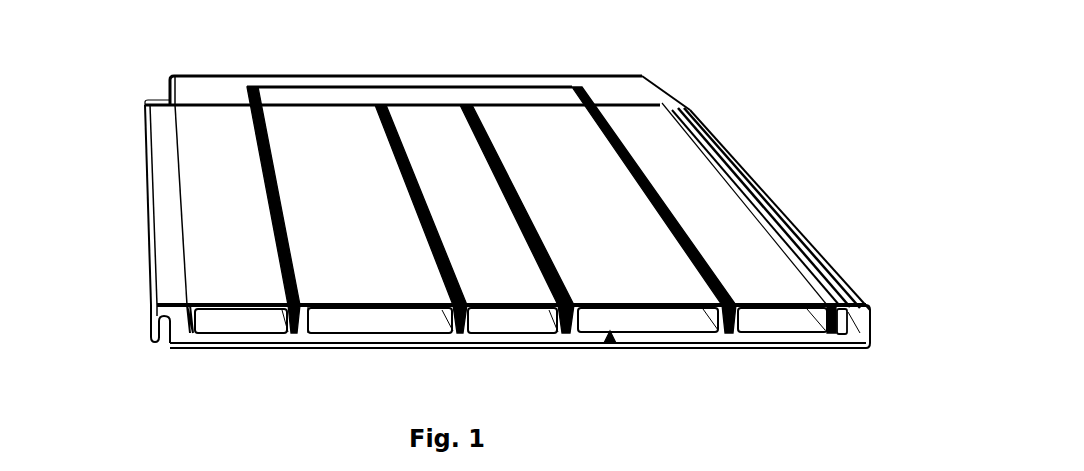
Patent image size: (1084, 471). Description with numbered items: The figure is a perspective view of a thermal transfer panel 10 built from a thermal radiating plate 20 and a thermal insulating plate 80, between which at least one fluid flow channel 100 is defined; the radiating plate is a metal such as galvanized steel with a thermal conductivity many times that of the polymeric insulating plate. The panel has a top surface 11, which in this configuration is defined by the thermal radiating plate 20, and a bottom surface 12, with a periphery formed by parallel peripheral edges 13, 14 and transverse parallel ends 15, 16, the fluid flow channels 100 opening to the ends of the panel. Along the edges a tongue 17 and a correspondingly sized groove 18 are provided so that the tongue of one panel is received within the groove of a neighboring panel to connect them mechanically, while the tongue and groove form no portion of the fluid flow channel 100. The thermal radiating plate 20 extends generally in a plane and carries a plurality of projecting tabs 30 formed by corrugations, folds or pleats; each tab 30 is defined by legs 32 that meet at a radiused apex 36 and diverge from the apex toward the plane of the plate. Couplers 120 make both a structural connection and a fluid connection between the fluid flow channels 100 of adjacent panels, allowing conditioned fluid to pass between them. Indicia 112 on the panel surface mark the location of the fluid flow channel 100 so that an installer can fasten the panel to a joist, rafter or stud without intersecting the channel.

The thermal transfer panel 10 is at (784, 77).
The top surface 11 is at (765, 305).
The bottom surface 12 is at (762, 345).
The peripheral edge 13 is at (146, 172).
The peripheral edge 14 is at (767, 190).
The end 15 is at (190, 345).
The end 16 is at (150, 101).
The tongue 17 is at (158, 343).
The groove 18 is at (162, 321).
The thermal radiating plate 20 is at (587, 203).
The projecting tab 30 is at (307, 322).
The leg 32 is at (197, 324).
The apex 36 is at (462, 332).
The thermal insulating plate 80 is at (715, 343).
The fluid flow channel 100 is at (380, 323).
The indicia 112 is at (153, 255).
The coupler 120 is at (277, 97).